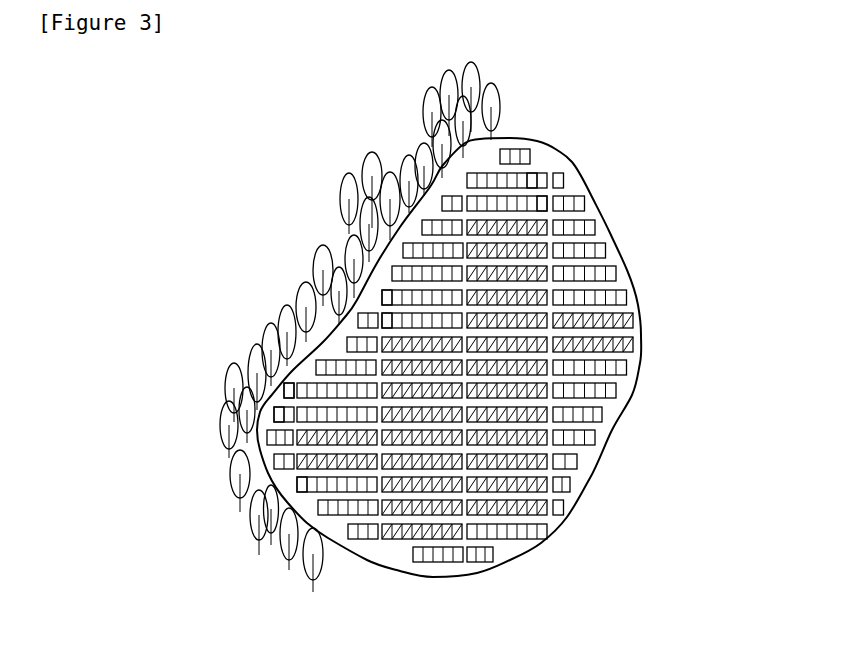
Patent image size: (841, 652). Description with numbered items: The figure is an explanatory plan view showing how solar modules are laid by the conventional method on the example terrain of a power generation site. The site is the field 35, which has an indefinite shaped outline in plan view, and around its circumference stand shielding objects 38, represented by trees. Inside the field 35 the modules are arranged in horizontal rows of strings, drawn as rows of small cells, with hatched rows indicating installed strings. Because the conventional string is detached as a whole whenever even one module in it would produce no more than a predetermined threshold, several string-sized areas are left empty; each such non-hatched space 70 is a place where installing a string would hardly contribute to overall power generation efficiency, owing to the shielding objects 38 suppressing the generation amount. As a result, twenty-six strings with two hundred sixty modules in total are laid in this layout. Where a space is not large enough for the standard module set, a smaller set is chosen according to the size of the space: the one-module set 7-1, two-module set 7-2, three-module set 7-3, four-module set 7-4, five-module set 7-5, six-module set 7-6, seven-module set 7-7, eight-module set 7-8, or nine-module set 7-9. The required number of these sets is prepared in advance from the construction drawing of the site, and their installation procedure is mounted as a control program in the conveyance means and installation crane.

The field of the power generation site 35 is at (580, 551).
The shielding objects 38 is at (368, 171).
The space where installation of a string hardly contributes to power generation 70 is at (546, 198).
The one-module set 7-1 is at (563, 179).
The two-module set 7-2 is at (570, 487).
The three-module set 7-3 is at (577, 462).
The four-module set 7-4 is at (585, 202).
The five-module set 7-5 is at (595, 440).
The six-module set 7-6 is at (603, 415).
The seven-module set 7-7 is at (610, 249).
The eight-module set 7-8 is at (618, 273).
The nine-module set 7-9 is at (627, 297).